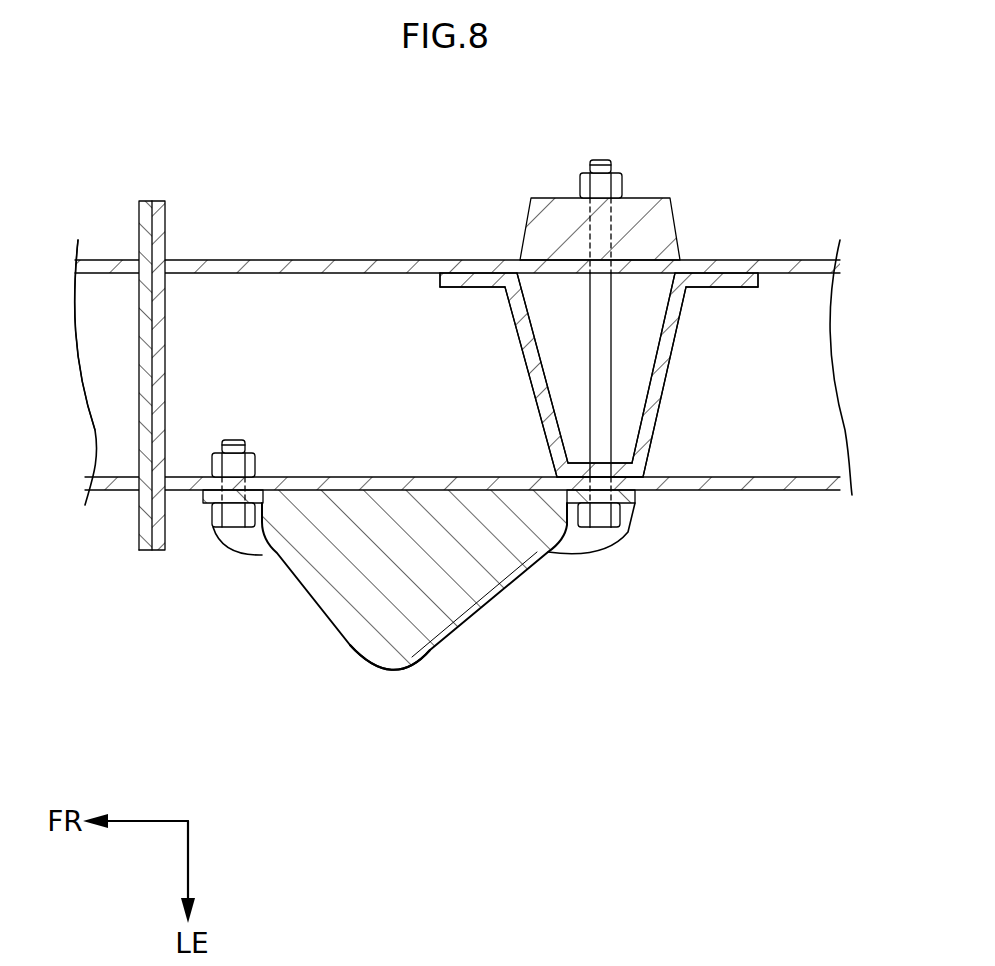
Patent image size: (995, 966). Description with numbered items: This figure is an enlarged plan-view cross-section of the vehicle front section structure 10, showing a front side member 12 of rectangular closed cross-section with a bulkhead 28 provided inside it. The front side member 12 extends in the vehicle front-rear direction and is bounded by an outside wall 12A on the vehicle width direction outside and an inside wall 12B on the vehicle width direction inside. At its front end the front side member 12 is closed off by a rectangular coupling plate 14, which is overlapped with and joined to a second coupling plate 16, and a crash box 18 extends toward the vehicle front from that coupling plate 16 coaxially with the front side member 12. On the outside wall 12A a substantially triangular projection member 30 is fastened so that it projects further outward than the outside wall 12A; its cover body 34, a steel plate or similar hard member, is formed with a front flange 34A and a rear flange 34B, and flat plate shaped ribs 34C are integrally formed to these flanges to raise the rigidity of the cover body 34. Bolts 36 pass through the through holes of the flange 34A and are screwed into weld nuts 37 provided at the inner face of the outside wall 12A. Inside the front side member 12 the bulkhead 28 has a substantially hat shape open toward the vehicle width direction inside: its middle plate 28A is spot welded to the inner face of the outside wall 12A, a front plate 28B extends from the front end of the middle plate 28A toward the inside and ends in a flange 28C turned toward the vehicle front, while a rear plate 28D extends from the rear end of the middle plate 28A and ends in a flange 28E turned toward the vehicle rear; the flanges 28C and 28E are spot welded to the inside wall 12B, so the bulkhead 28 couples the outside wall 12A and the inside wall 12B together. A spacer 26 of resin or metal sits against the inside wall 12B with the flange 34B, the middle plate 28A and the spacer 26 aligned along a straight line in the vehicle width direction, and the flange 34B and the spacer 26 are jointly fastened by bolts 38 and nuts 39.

The vehicle front section structure 10 is at (387, 700).
The front side member 12 is at (463, 366).
The outside wall 12A is at (750, 492).
The inside wall 12B is at (777, 260).
The coupling plate 14 is at (167, 222).
The coupling plate 16 is at (138, 217).
The crash box 18 is at (107, 258).
The spacer 26 is at (653, 208).
The bulkhead 28 is at (574, 375).
The middle plate 28A is at (577, 462).
The front plate 28B is at (523, 345).
The flange 28C is at (440, 278).
The rear plate 28D is at (668, 362).
The flange 28E is at (758, 278).
The projection member 30 is at (428, 657).
The cover body 34 is at (421, 598).
The flange 34A is at (207, 497).
The flange 34B is at (635, 495).
The rib 34C is at (250, 556).
The bolt 36 is at (233, 518).
The weld nut 37 is at (253, 465).
The bolt 38 is at (600, 520).
The nut 39 is at (582, 188).